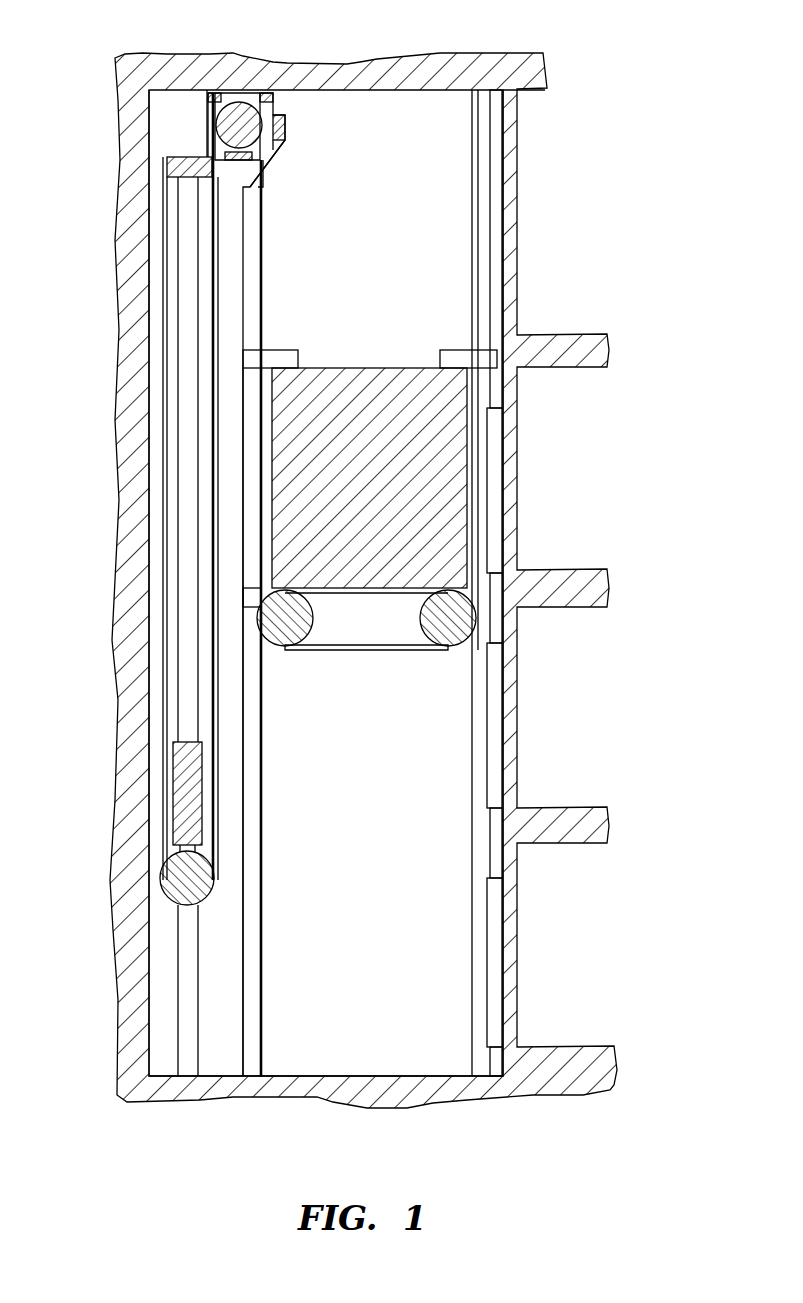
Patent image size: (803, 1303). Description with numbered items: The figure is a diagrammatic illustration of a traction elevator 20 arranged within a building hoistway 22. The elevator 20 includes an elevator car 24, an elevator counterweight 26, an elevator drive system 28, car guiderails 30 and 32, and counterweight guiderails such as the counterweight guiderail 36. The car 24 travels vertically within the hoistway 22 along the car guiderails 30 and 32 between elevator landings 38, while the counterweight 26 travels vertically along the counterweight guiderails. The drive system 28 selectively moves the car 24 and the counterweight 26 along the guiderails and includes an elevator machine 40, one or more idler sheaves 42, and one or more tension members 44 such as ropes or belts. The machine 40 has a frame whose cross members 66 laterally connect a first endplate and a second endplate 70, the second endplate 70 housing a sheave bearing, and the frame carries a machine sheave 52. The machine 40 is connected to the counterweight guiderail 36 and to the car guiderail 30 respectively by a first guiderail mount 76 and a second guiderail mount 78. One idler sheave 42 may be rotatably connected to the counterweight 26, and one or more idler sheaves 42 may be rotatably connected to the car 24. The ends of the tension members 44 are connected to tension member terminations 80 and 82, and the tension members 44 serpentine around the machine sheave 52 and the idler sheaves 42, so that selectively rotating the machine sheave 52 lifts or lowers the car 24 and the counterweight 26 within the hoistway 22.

The traction elevator 20 is at (392, 98).
The building hoistway 22 is at (326, 583).
The elevator car 24 is at (369, 478).
The elevator counterweight 26 is at (175, 800).
The elevator drive system 28 is at (164, 117).
The car guiderail 30 is at (262, 995).
The car guiderail 32 is at (465, 965).
The counterweight guiderail 36 is at (178, 995).
The elevator landing 38 is at (563, 460).
The elevator machine 40 is at (230, 88).
The idler sheave 42 is at (180, 875).
The tension member 44 is at (213, 305).
The machine sheave 52 is at (285, 125).
The cross member 66 is at (214, 95).
The second endplate 70 is at (195, 122).
The first guiderail mount 76 is at (166, 163).
The second guiderail mount 78 is at (280, 150).
The tension member termination 80 is at (168, 170).
The tension member termination 82 is at (506, 90).